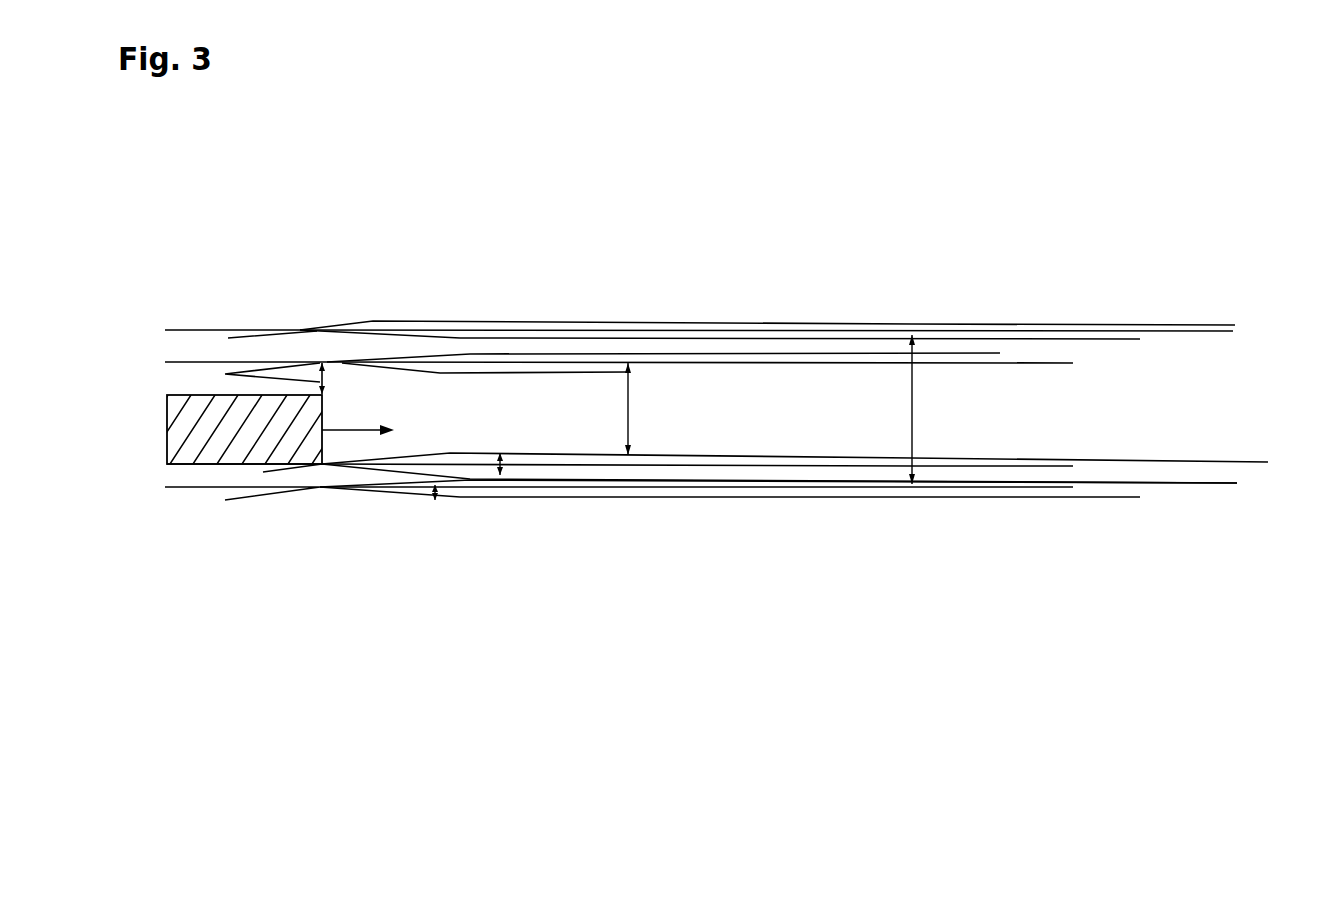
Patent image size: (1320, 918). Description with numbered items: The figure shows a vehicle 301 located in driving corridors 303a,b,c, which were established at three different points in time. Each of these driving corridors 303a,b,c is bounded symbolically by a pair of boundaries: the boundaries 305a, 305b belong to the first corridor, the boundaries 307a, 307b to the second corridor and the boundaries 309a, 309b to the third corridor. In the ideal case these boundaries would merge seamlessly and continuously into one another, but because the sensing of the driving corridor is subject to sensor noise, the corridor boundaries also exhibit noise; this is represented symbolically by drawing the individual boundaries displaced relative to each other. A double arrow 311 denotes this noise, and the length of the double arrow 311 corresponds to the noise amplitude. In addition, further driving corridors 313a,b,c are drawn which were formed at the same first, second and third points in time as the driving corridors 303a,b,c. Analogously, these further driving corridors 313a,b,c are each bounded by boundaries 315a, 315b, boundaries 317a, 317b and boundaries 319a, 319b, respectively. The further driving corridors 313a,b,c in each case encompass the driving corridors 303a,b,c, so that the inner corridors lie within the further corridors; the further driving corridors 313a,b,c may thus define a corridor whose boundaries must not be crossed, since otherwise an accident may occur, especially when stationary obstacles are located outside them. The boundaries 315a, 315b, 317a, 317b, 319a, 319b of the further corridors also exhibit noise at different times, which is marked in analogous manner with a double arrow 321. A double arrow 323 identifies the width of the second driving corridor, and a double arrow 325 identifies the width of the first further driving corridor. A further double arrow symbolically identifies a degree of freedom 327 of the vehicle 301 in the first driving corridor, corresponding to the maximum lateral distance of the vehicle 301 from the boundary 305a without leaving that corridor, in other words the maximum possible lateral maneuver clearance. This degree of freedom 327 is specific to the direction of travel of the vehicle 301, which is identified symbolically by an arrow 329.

The vehicle 301 is at (167, 442).
The driving corridors 303a,b,c is at (1058, 413).
The boundary 305a is at (175, 362).
The boundary 305b is at (167, 465).
The boundary 307a is at (447, 352).
The boundary 307b is at (595, 453).
The boundary 309a is at (500, 362).
The boundary 309b is at (532, 463).
The double arrow 311 is at (492, 461).
The further driving corridors 313a,b,c is at (1095, 353).
The boundary 315a is at (224, 330).
The boundary 315b is at (181, 488).
The boundary 317a is at (378, 338).
The boundary 317b is at (282, 490).
The boundary 319a is at (556, 340).
The boundary 319b is at (710, 497).
The double arrow 321 is at (417, 497).
The double arrow 323 is at (628, 415).
The double arrow 325 is at (912, 413).
The degree of freedom 327 is at (225, 374).
The arrow 329 is at (353, 423).